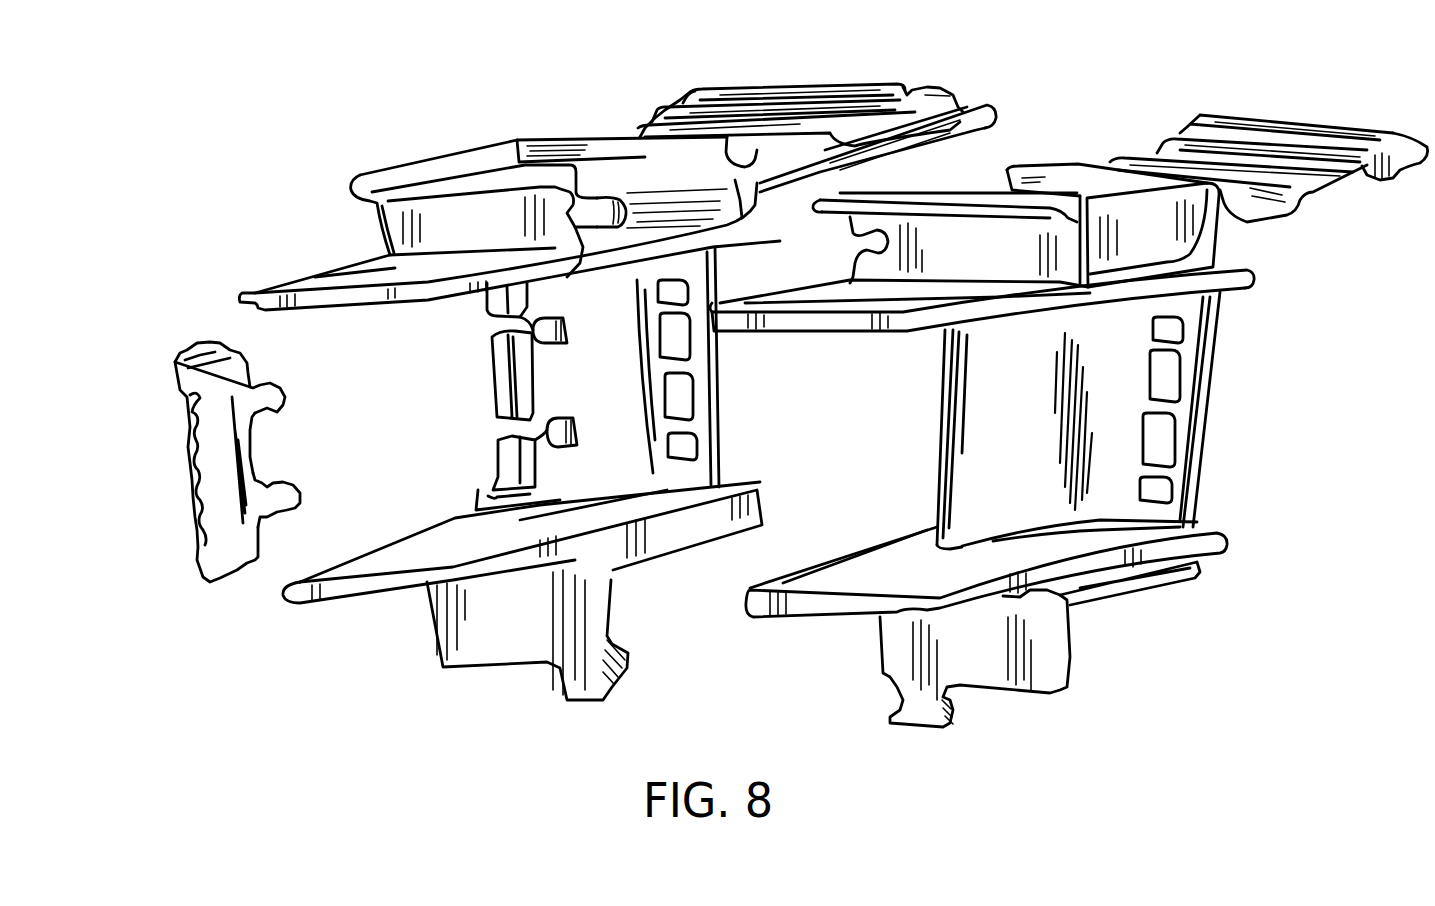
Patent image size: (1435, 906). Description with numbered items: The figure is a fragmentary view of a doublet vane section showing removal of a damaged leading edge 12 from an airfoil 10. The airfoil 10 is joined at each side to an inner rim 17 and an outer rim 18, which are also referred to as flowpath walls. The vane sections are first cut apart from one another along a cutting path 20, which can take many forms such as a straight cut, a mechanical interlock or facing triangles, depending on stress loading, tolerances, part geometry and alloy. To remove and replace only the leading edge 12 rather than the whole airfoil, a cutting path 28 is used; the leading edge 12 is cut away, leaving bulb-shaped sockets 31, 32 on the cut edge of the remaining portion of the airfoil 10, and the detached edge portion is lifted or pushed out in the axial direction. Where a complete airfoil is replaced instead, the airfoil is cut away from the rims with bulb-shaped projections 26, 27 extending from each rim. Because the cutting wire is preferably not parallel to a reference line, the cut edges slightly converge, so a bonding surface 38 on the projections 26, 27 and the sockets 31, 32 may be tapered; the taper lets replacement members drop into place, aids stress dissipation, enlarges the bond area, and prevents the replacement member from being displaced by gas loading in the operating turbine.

The airfoil 10 is at (632, 428).
The leading edge 12 is at (182, 392).
The inner rim 17 is at (437, 542).
The outer rim 18 is at (455, 218).
The cutting path 20 is at (747, 163).
The bulb-shaped projection 26 is at (287, 500).
The bulb-shaped projection 27 is at (283, 398).
The cutting path 28 is at (547, 423).
The bulb-shaped socket 31 is at (578, 443).
The bulb-shaped socket 32 is at (568, 334).
The bonding surface 38 is at (497, 370).